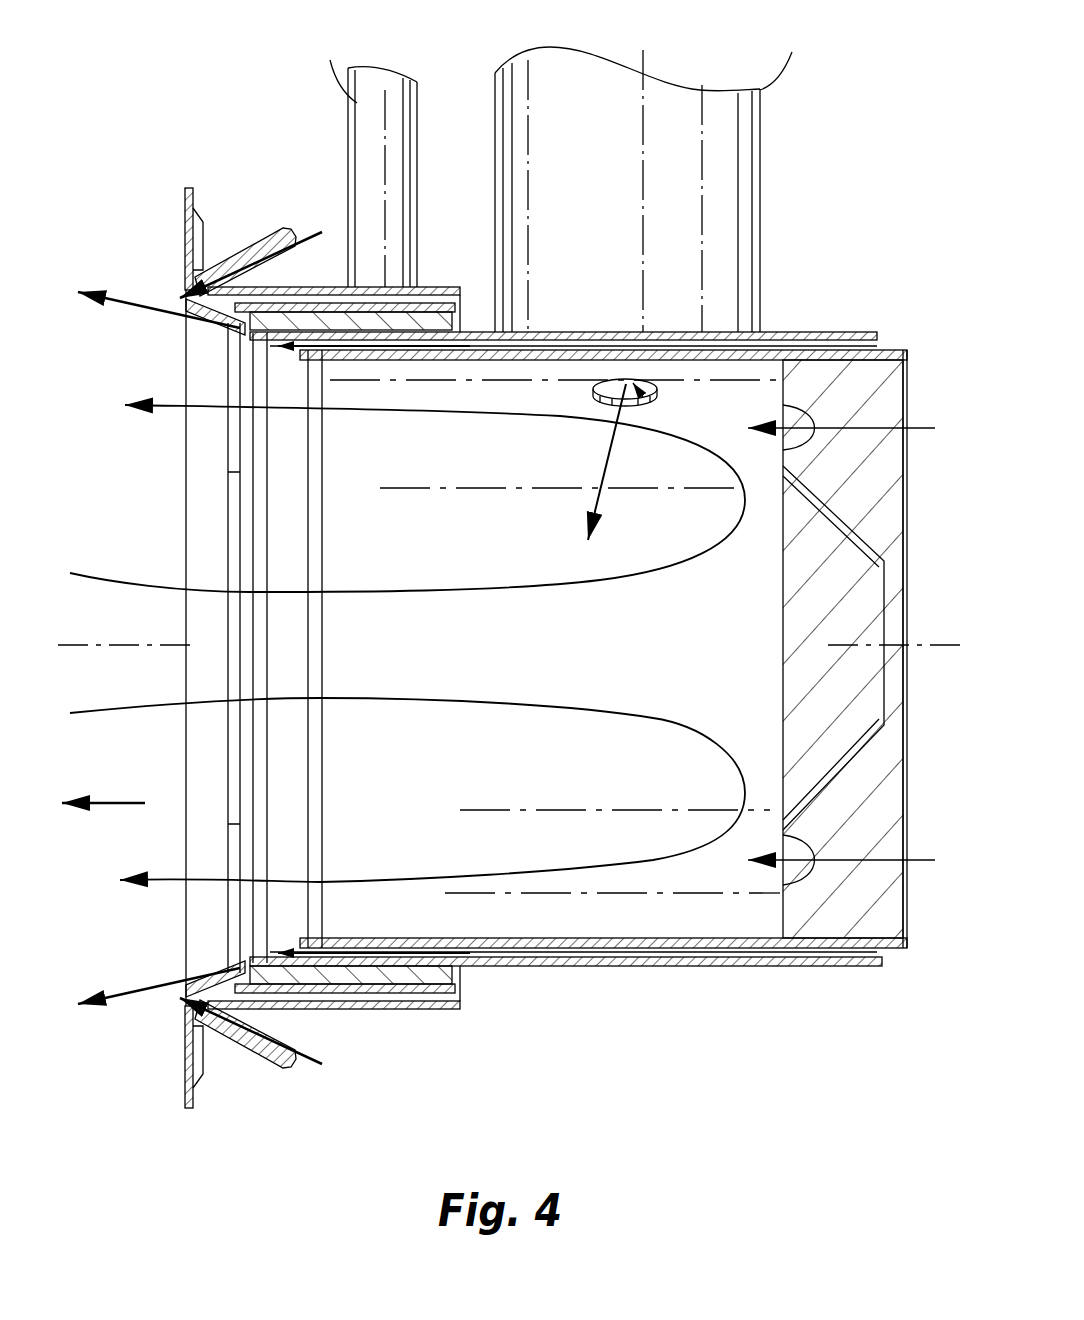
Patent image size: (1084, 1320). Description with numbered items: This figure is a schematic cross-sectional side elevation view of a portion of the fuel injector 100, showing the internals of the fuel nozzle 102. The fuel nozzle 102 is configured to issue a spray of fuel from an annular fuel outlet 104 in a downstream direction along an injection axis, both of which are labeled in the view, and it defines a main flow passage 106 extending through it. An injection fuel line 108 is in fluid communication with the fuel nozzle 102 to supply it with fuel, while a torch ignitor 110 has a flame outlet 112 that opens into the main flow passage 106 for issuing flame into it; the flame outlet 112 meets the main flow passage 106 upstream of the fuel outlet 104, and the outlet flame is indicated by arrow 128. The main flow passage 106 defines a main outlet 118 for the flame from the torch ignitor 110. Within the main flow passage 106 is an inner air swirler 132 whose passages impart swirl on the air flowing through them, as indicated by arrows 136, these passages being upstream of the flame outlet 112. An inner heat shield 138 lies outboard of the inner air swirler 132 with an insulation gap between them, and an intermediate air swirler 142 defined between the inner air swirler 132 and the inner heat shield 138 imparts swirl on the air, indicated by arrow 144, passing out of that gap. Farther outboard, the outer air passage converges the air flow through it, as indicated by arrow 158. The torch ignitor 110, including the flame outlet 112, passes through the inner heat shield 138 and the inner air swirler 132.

The fuel injector 100 is at (125, 175).
The fuel nozzle 102 is at (607, 588).
The fuel outlet 104 is at (210, 322).
The main flow passage 106 is at (558, 663).
The injection fuel line 108 is at (352, 105).
The torch ignitor 110 is at (752, 118).
The flame outlet 112 is at (648, 402).
The main outlet 118 is at (162, 546).
The arrow indicating outlet flame 128 is at (604, 470).
The inner air swirler 132 is at (890, 512).
The arrows indicating swirled air flow 136 is at (823, 432).
The inner heat shield 138 is at (848, 331).
The intermediate air swirler 142 is at (340, 362).
The arrow indicating air from insulation gap 144 is at (322, 950).
The arrow indicating converging outer air flow 158 is at (288, 238).